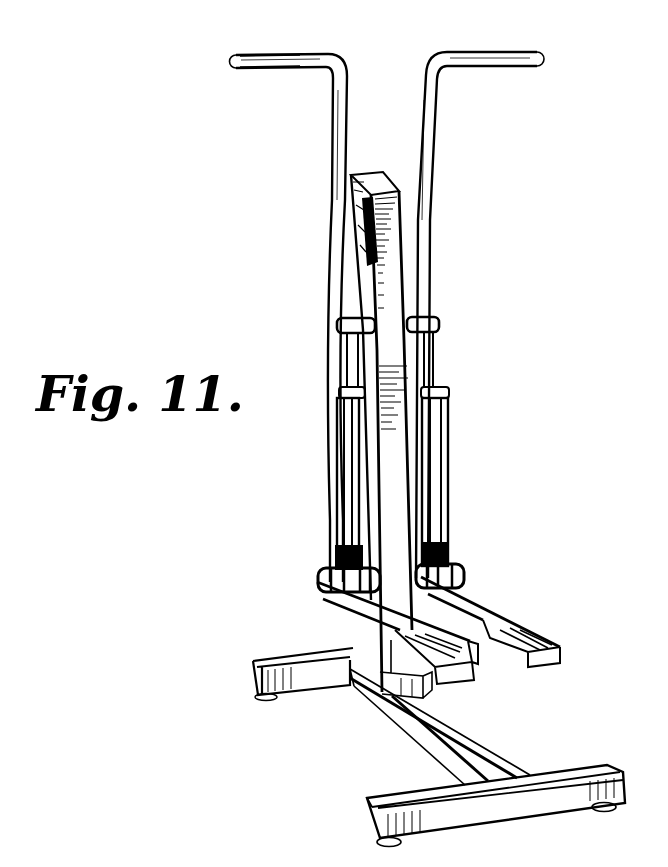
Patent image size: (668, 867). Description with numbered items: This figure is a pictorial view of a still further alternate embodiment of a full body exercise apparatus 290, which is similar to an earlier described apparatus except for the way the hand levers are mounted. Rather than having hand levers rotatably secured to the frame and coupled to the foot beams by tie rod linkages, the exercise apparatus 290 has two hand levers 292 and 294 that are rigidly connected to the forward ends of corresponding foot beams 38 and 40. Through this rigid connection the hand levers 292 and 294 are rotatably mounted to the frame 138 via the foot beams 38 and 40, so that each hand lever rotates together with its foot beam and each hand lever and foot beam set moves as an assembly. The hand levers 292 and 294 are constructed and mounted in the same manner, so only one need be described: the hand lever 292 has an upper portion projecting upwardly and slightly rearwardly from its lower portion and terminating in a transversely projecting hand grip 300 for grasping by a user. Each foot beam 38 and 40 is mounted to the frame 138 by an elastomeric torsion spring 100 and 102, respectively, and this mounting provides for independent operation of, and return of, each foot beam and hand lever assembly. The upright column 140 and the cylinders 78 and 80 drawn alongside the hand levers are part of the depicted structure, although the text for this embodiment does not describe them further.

The exercise apparatus 290 is at (591, 207).
The hand lever 292 is at (323, 127).
The hand lever 294 is at (443, 130).
The hand grip 300 is at (258, 66).
The upright column 140 is at (390, 277).
The left hydraulic cylinder 78 is at (332, 441).
The right hydraulic cylinder 80 is at (452, 497).
The elastomeric torsion spring 100 is at (328, 578).
The elastomeric torsion spring 102 is at (458, 549).
The foot beam 38 is at (360, 618).
The foot beam 40 is at (488, 608).
The frame 138 is at (367, 718).